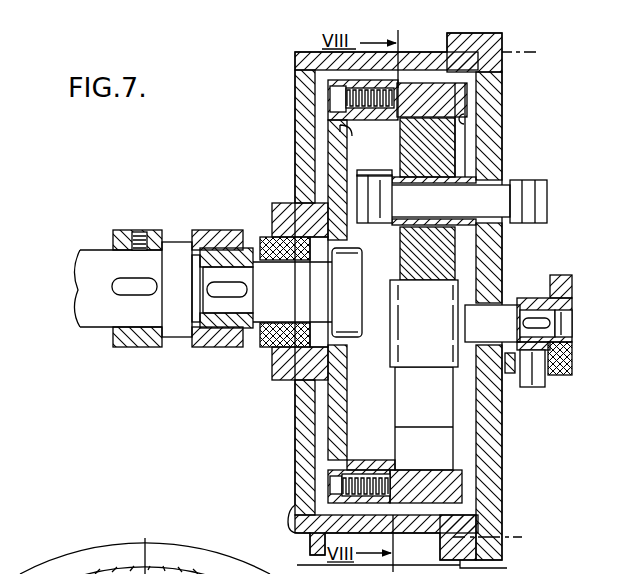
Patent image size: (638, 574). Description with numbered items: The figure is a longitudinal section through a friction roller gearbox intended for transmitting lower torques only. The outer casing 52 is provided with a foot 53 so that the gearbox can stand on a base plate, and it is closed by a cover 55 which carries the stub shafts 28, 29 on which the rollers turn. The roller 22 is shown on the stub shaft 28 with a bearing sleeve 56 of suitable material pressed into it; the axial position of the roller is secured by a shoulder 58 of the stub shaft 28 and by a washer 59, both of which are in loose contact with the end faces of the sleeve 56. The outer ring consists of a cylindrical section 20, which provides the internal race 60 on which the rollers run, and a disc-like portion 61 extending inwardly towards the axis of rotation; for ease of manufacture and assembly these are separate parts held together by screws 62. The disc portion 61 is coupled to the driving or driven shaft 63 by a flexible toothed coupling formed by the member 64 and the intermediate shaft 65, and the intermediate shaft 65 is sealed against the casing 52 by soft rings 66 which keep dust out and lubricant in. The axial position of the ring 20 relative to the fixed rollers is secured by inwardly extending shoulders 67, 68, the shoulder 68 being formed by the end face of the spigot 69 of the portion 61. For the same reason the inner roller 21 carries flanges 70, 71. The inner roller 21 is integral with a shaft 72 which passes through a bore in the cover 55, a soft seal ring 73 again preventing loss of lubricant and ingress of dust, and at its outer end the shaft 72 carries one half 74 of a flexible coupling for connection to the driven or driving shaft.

The cylindrical section of the outer ring 20 is at (455, 101).
The inner roller 21 is at (433, 345).
The roller 22 is at (438, 143).
The stub shaft 28 is at (505, 195).
The stub shaft 29 is at (556, 377).
The outer casing 52 is at (306, 100).
The foot 53 is at (313, 540).
The cover 55 is at (492, 447).
The bearing sleeve 56 is at (413, 172).
The shoulder 58 is at (468, 183).
The washer 59 is at (378, 177).
The internal race 60 is at (445, 472).
The disc-like portion 61 is at (334, 400).
The screws 62 is at (305, 60).
The driving shaft 63 is at (116, 262).
The coupling member 64 is at (157, 239).
The intermediate shaft 65 is at (258, 327).
The soft rings 66 is at (280, 360).
The shoulder 67 is at (464, 119).
The shoulder 68 is at (381, 88).
The spigot 69 is at (345, 133).
The flange 70 is at (470, 281).
The flange 71 is at (398, 282).
The shaft 72 is at (520, 386).
The soft seal ring 73 is at (500, 304).
The coupling half 74 is at (548, 376).